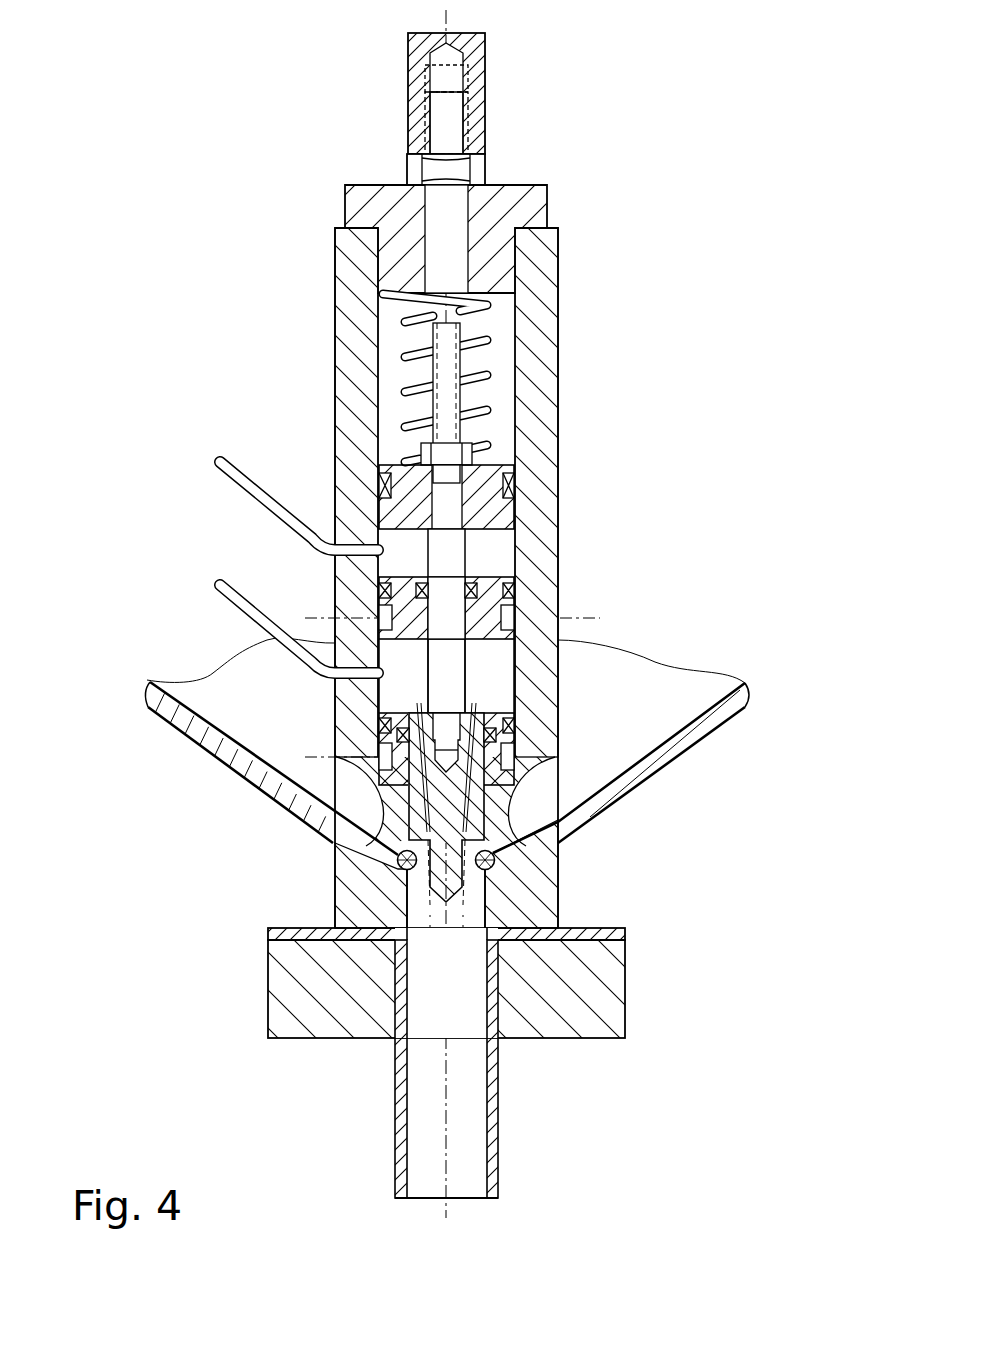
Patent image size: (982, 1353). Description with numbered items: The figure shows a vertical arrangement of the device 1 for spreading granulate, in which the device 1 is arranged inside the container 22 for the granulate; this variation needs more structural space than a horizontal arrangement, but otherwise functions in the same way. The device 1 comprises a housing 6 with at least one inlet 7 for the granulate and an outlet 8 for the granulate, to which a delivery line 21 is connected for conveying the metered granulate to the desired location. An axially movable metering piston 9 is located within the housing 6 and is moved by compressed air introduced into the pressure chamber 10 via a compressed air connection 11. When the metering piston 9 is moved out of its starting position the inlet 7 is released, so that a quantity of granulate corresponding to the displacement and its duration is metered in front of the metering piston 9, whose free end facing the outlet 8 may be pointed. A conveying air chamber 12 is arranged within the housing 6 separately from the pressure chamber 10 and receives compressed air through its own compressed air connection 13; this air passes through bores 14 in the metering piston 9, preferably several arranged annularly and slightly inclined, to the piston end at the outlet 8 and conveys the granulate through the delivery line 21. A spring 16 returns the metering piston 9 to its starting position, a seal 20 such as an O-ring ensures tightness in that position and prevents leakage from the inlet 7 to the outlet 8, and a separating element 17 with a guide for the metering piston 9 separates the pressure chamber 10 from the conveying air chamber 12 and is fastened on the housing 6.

The device for spreading granulate 1 is at (645, 424).
The housing 6 is at (530, 303).
The inlet 7 is at (365, 813).
The outlet 8 is at (440, 935).
The metering piston 9 is at (388, 778).
The pressure chamber 10 is at (490, 555).
The compressed air connection 11 is at (345, 540).
The conveying air chamber 12 is at (493, 668).
The compressed air connection 13 is at (330, 672).
The bore 14 is at (400, 735).
The spring 16 is at (487, 372).
The separating element 17 is at (400, 615).
The seal 20 is at (400, 866).
The delivery line 21 is at (493, 1155).
The container 22 is at (643, 693).